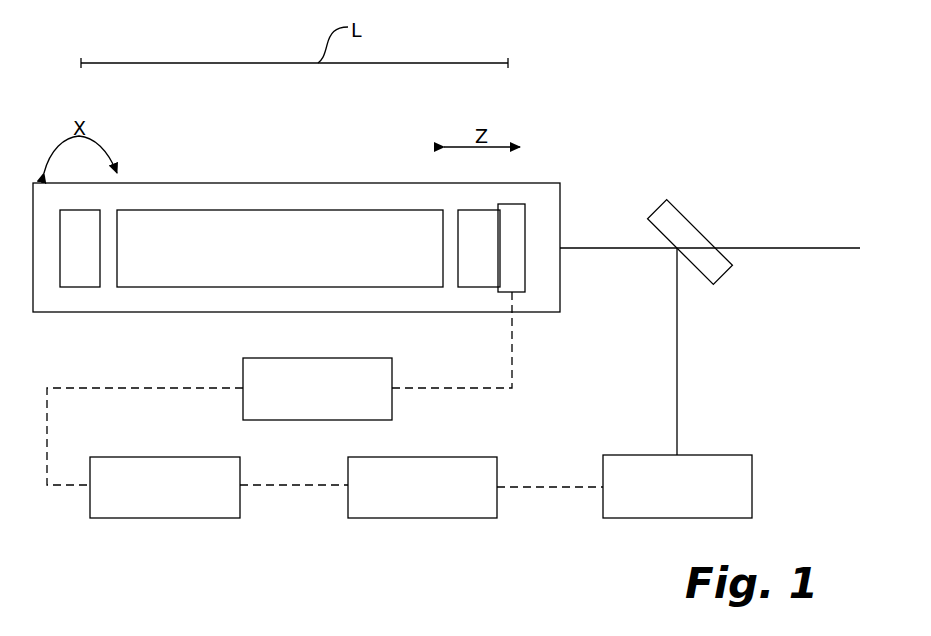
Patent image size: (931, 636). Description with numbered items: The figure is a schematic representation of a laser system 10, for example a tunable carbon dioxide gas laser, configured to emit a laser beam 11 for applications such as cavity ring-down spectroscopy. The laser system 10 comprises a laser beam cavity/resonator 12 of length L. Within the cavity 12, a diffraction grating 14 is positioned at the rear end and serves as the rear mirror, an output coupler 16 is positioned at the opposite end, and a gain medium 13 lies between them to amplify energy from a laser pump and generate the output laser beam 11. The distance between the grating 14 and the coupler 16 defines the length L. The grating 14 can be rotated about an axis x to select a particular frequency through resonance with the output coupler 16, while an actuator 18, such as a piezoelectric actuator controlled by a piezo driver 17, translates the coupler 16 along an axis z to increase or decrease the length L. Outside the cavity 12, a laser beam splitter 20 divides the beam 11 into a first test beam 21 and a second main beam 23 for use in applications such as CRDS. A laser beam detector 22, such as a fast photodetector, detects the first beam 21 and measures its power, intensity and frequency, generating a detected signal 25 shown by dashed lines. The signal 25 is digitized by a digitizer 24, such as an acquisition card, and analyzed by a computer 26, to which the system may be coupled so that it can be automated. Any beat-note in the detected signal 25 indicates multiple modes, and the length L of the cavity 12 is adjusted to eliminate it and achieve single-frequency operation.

The laser system 10 is at (607, 128).
The laser beam 11 is at (582, 248).
The laser beam cavity/resonator 12 is at (265, 183).
The gain medium 13 is at (280, 248).
The diffraction grating 14 is at (80, 248).
The output coupler 16 is at (511, 248).
The piezo driver 17 is at (317, 389).
The actuator 18 is at (479, 248).
The laser beam splitter 20 is at (706, 217).
The first test beam 21 is at (677, 388).
The laser beam detector 22 is at (677, 486).
The second main beam 23 is at (769, 248).
The digitizer 24 is at (422, 487).
The detected signal 25 is at (545, 489).
The computer 26 is at (165, 487).